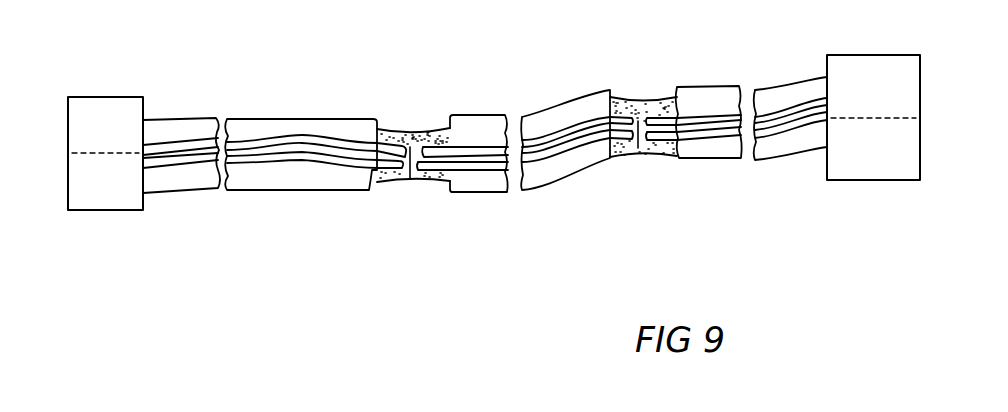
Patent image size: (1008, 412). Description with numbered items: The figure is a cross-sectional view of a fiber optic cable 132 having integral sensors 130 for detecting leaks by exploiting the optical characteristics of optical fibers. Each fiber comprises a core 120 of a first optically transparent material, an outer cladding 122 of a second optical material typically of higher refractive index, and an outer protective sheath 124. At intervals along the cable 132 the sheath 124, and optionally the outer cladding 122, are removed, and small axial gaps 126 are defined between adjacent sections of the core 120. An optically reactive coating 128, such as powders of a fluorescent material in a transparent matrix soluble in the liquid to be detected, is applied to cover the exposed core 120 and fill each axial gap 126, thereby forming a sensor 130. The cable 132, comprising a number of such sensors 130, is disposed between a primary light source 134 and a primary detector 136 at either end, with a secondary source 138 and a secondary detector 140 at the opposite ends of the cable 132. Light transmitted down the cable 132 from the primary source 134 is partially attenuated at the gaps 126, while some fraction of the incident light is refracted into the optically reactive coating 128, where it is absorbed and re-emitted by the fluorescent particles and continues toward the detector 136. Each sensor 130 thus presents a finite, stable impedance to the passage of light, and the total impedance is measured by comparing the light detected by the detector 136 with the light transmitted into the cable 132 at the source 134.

The core 120 is at (287, 150).
The outer cladding 122 is at (354, 165).
The outer protective sheath 124 is at (322, 123).
The axial gap 126 is at (411, 168).
The optically reactive coating 128 is at (420, 128).
The sensor 130 is at (447, 206).
The cable 132 is at (281, 100).
The primary light source 134 is at (112, 105).
The primary detector 136 is at (871, 62).
The secondary source 138 is at (872, 176).
The secondary detector 140 is at (130, 202).